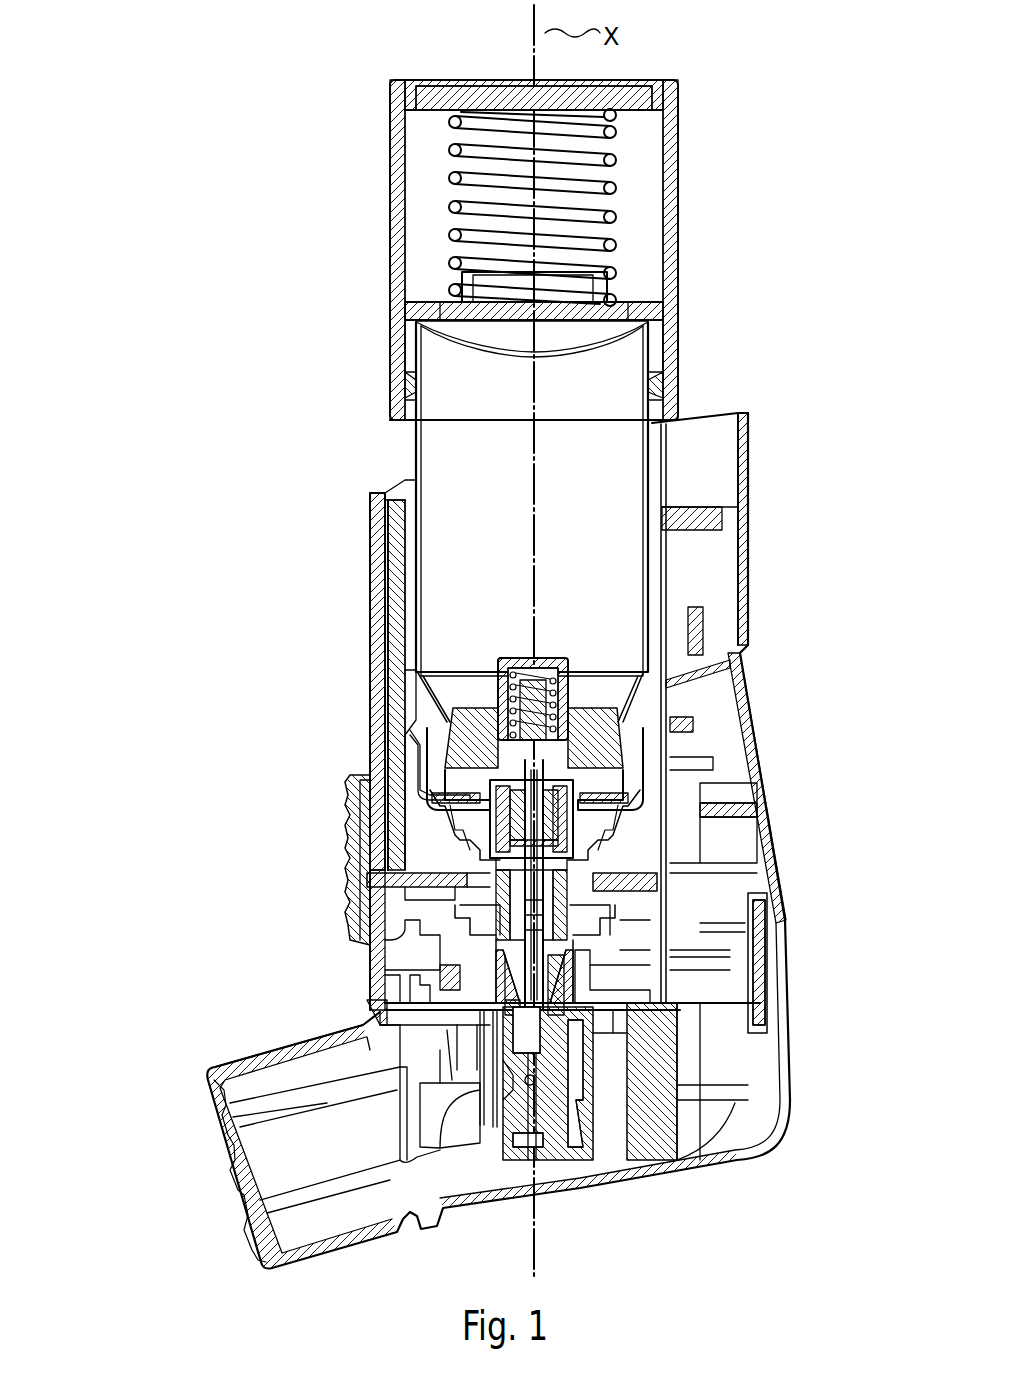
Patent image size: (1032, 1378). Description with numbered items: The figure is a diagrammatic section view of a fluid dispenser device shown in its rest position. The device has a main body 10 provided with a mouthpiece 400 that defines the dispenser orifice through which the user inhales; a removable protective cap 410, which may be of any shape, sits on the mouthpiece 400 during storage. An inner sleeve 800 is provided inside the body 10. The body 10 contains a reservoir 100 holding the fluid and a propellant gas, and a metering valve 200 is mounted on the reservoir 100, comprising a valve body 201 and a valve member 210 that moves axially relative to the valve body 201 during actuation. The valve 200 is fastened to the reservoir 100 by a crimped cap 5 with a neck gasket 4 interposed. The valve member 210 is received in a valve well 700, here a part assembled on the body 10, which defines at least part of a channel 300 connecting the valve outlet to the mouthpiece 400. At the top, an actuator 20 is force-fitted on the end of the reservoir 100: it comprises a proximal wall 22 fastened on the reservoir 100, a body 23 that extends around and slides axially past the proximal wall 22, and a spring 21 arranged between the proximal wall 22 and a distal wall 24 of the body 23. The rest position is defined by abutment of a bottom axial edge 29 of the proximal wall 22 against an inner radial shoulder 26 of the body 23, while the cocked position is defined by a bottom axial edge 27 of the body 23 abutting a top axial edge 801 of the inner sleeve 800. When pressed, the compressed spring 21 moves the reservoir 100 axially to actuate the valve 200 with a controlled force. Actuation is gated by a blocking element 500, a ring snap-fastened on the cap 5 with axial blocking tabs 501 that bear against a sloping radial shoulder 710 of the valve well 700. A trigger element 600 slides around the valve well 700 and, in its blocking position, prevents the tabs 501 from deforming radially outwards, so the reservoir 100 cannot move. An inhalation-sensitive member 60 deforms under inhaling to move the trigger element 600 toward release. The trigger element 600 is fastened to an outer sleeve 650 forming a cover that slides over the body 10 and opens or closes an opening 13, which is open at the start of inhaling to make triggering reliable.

The neck gasket 4 is at (655, 728).
The crimped cap 5 is at (645, 818).
The main body 10 is at (378, 572).
The opening 13 is at (430, 970).
The actuator 20 is at (378, 221).
The spring 21 is at (594, 155).
The proximal wall 22 is at (516, 318).
The body 23 is at (390, 150).
The distal wall 24 is at (455, 82).
The inner radial shoulder 26 is at (405, 378).
The bottom axial edge 27 is at (410, 426).
The bottom axial edge 29 is at (405, 362).
The inhalation-sensitive member 60 is at (626, 958).
The reservoir 100 is at (605, 375).
The metering valve 200 is at (568, 860).
The valve body 201 is at (485, 689).
The valve member 210 is at (575, 883).
The channel 300 is at (600, 1080).
The mouthpiece 400 is at (303, 1057).
The removable protective cap 410 is at (203, 1064).
The blocking element 500 is at (458, 826).
The axial blocking tabs 501 is at (470, 900).
The trigger element 600 is at (486, 945).
The outer sleeve 650 is at (345, 825).
The valve well 700 is at (640, 965).
The radial shoulder 710 is at (503, 960).
The inner sleeve 800 is at (398, 712).
The top axial edge 801 is at (388, 495).